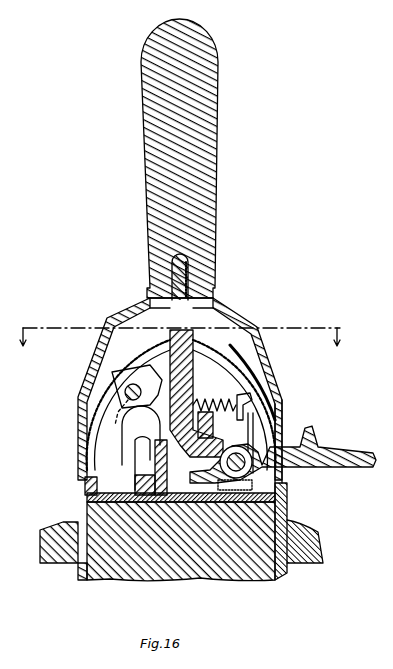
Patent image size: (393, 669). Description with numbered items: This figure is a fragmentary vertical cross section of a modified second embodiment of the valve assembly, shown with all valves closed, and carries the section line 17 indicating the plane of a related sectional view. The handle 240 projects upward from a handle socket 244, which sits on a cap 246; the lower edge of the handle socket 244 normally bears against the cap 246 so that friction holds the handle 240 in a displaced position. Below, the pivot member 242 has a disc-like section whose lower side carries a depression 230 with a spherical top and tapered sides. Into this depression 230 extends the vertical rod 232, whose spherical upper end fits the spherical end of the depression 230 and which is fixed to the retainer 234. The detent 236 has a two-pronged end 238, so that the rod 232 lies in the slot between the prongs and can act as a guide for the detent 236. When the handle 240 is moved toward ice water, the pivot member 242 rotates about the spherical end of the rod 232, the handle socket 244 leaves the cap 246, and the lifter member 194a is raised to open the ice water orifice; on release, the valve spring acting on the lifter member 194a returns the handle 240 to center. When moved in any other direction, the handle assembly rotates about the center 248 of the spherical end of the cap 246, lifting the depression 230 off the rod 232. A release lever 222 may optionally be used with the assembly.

The section line 17- 17 is at (177, 351).
The handle 240 is at (209, 150).
The handle socket 244 is at (242, 312).
The pivot member 242 is at (246, 380).
The lifter member 194a is at (245, 410).
The cap 246 is at (282, 425).
The release lever 222 is at (338, 453).
The center of the spherical end of the cap 248 is at (137, 440).
The depression 230 is at (165, 452).
The vertical rod 232 is at (150, 465).
The retainer 234 is at (85, 497).
The detent 236 is at (87, 503).
The two-pronged end 238 is at (80, 560).